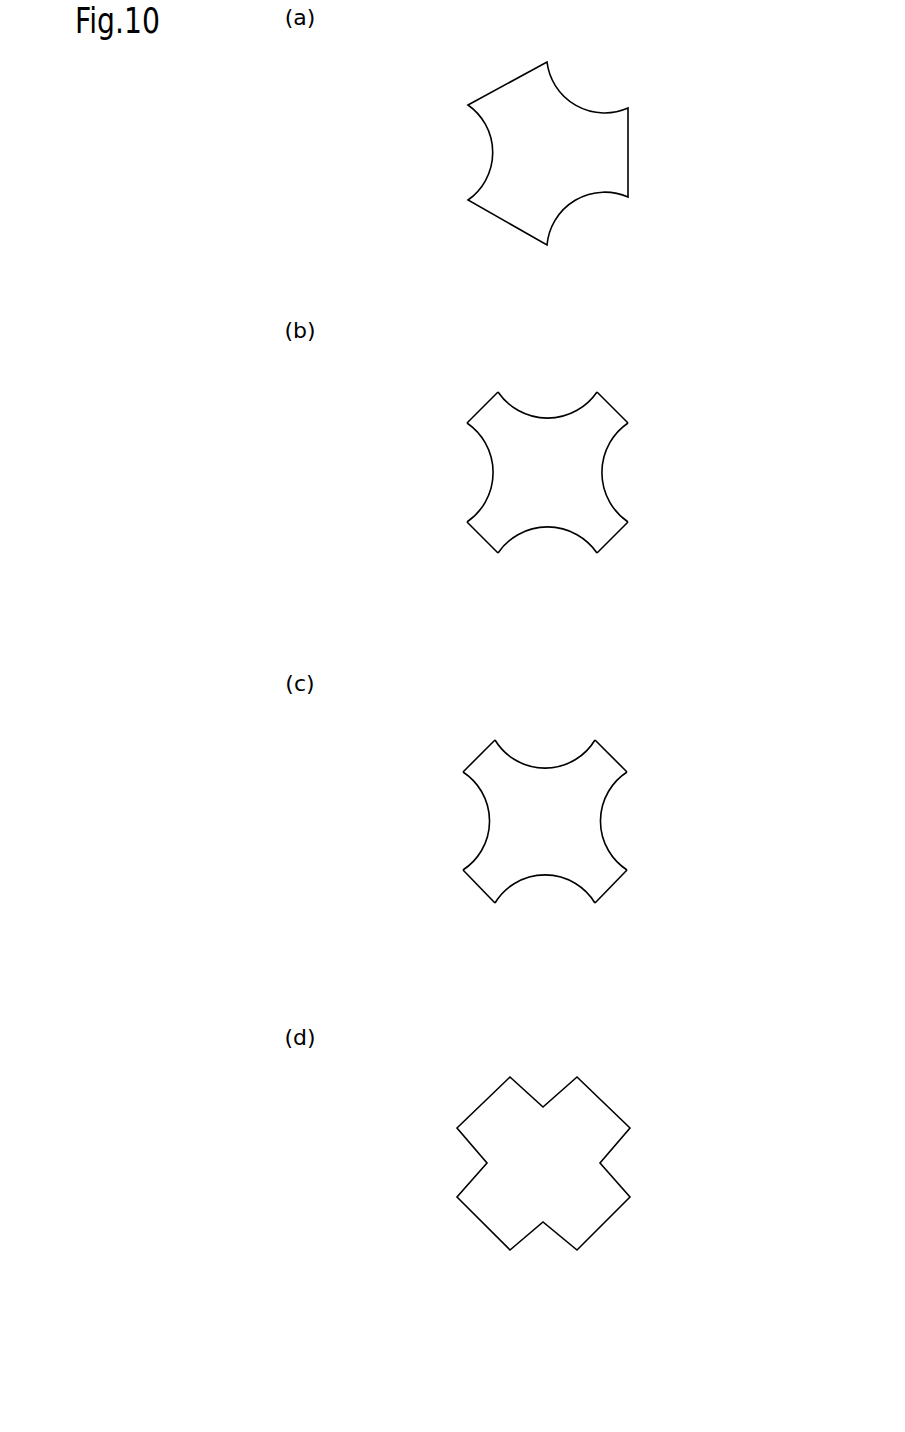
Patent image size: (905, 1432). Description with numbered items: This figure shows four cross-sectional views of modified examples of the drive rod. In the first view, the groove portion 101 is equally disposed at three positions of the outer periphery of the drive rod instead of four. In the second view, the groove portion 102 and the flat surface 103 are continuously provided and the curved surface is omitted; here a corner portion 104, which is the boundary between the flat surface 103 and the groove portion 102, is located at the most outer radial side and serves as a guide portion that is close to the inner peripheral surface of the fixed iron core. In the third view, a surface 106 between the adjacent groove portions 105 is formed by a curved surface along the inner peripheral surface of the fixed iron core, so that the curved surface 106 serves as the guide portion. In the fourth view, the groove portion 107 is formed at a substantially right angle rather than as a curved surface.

The groove portion 101 is at (582, 100).
The groove portion 102 is at (547, 410).
The flat surface 103 is at (496, 395).
The corner portion 104 is at (535, 474).
The groove portion 105 is at (546, 745).
The curved surface 106 is at (483, 747).
The groove portion 107 is at (542, 1090).